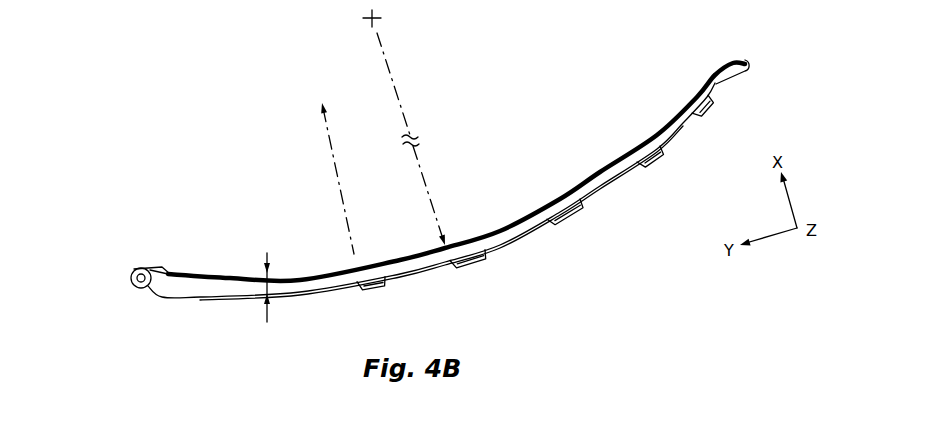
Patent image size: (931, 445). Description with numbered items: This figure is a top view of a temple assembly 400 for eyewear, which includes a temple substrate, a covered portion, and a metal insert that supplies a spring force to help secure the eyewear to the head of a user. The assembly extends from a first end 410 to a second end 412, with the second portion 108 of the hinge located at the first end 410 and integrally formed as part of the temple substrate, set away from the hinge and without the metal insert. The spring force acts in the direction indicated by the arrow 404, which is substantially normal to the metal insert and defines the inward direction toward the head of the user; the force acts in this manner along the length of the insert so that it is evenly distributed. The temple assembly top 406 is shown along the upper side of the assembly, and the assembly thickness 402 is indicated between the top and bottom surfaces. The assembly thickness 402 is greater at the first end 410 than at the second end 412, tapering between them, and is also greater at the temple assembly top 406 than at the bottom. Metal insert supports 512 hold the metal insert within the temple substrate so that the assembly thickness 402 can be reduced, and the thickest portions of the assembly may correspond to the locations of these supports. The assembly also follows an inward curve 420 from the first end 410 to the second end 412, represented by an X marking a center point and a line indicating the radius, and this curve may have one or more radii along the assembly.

The temple assembly 400 is at (106, 48).
The assembly thickness 402 is at (265, 262).
The arrow 404 is at (325, 132).
The temple assembly top 406 is at (657, 137).
The first end 410 is at (135, 270).
The second end 412 is at (750, 63).
The inward curve 420 is at (408, 130).
The second portion 108 is at (132, 288).
The metal insert supports 512 is at (378, 288).